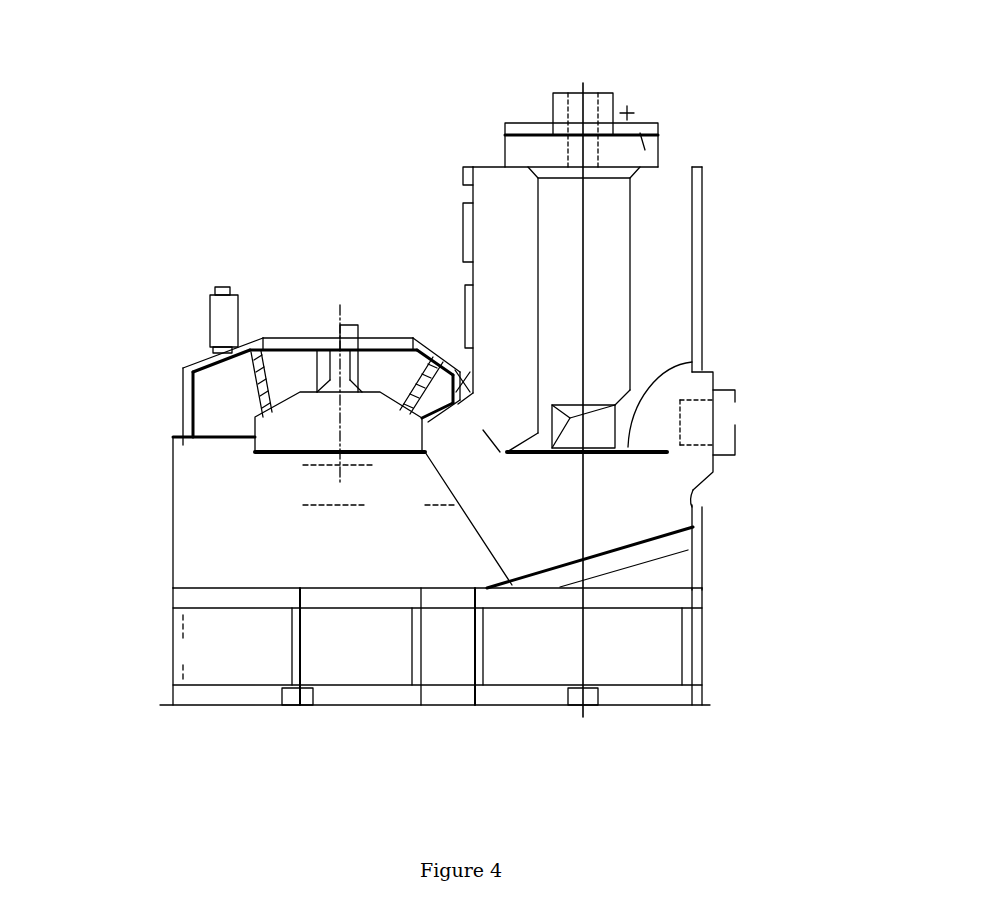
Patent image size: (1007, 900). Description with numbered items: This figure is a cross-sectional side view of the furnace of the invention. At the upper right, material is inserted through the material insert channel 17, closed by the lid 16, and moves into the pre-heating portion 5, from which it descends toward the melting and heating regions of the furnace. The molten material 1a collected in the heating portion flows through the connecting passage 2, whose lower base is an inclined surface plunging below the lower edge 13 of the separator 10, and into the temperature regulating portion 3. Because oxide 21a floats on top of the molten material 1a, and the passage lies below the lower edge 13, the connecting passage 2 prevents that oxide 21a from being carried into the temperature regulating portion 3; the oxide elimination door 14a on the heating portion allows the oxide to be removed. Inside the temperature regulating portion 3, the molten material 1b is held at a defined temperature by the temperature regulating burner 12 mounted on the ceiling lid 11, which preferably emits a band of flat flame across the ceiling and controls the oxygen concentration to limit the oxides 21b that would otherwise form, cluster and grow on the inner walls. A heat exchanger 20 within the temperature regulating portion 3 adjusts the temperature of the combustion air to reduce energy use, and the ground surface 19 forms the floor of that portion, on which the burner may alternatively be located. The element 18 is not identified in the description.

The lid 16 is at (640, 133).
The material insert channel 17 is at (595, 215).
The pre-heating portion 5 is at (600, 283).
The oxide 21a is at (692, 372).
The oxide elimination door 14a is at (722, 426).
The molten material 1a is at (597, 460).
The separator 10 is at (647, 590).
The connecting passage 2 is at (483, 438).
The ground surface 19 is at (267, 558).
The support ledge 18 is at (200, 458).
The ceiling lid 11 is at (227, 398).
The temperature regulating portion 3 is at (287, 433).
The oxides 21b is at (290, 462).
The temperature regulating burner 12 is at (325, 335).
The molten material 1b is at (356, 487).
The heat exchanger 20 is at (211, 290).
The lower edge 13 is at (488, 440).